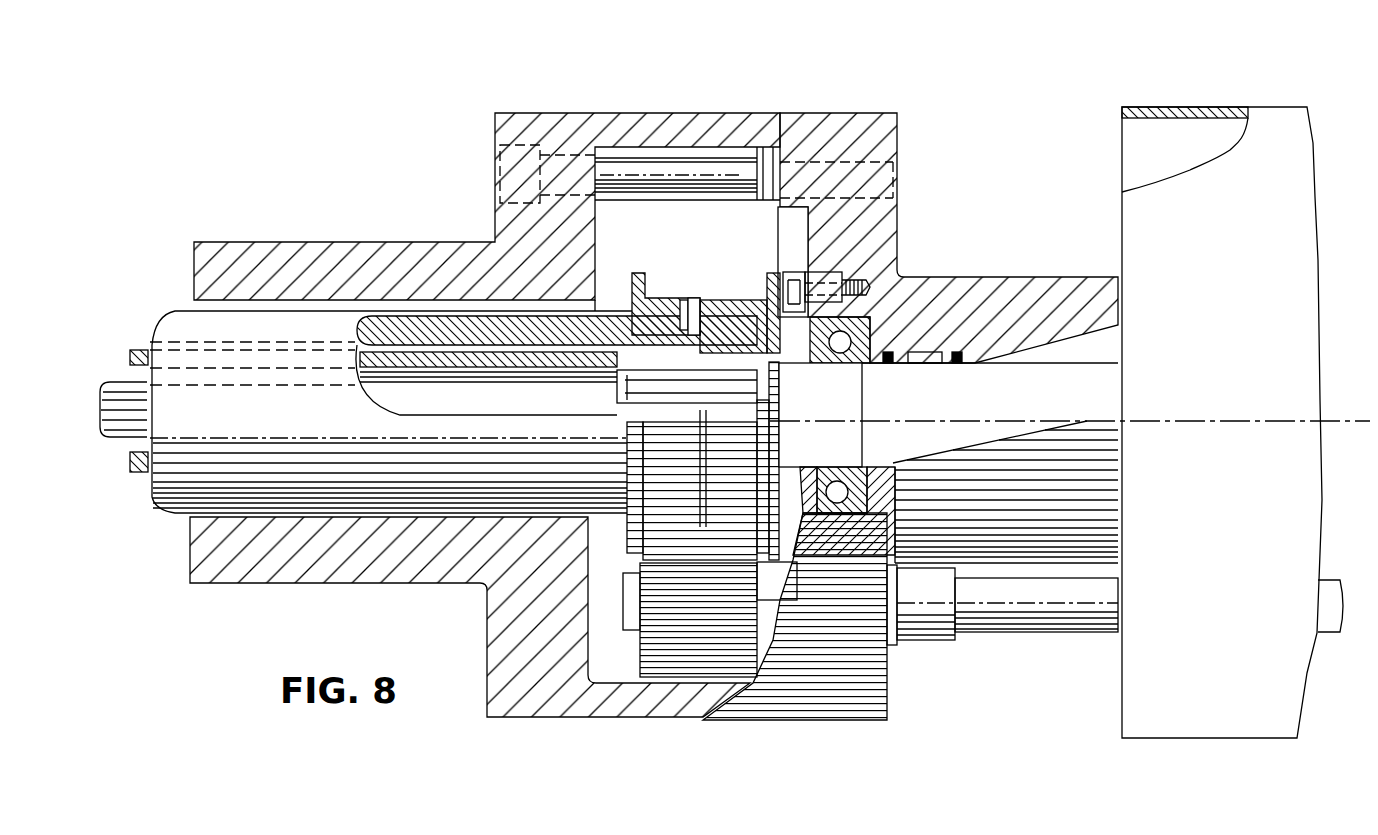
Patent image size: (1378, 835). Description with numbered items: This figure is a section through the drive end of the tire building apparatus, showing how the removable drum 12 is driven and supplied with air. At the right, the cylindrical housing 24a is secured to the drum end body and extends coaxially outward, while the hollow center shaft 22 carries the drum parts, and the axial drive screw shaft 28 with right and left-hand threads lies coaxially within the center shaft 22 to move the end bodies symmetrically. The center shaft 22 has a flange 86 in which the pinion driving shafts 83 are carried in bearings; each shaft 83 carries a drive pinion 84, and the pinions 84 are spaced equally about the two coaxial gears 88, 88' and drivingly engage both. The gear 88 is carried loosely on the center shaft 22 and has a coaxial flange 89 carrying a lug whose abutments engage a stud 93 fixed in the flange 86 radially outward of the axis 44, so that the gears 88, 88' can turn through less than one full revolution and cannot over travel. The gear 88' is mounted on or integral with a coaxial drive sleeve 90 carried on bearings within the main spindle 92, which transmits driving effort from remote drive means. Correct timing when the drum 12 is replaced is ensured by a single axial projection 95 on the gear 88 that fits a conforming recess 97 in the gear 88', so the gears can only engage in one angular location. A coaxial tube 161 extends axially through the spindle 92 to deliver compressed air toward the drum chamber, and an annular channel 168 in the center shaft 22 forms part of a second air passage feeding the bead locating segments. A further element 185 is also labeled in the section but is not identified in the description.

The drum 12 is at (1246, 100).
The center shaft 22 is at (1048, 293).
The cylindrical housing 24a is at (1163, 105).
The axial drive screw shaft 28 is at (1087, 377).
The axis 44 is at (1250, 421).
The pinion driving shaft 83 is at (1052, 603).
The drive pinion 84 is at (673, 655).
The flange 86 is at (843, 680).
The coaxial gear 88 is at (731, 382).
The coaxial gear 88' is at (662, 285).
The coaxial flange 89 is at (770, 295).
The coaxial drive sleeve 90 is at (448, 327).
The main spindle 92 is at (207, 550).
The stud 93 is at (800, 270).
The axial projection 95 is at (695, 318).
The recess 97 is at (680, 320).
The tube 161 is at (125, 395).
The annular channel 168 is at (932, 358).
The key 185 is at (628, 385).